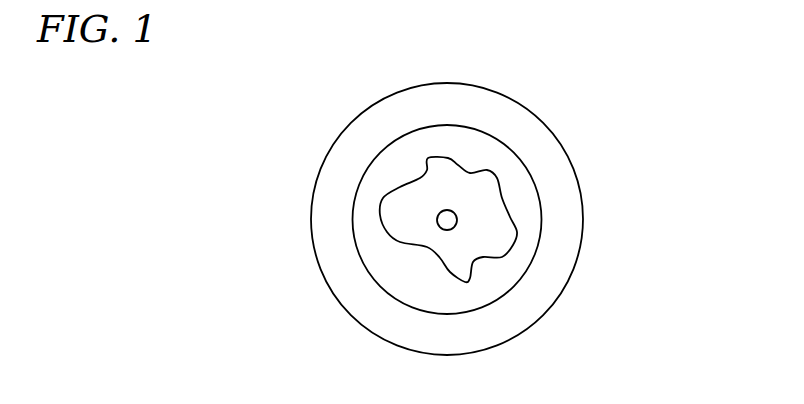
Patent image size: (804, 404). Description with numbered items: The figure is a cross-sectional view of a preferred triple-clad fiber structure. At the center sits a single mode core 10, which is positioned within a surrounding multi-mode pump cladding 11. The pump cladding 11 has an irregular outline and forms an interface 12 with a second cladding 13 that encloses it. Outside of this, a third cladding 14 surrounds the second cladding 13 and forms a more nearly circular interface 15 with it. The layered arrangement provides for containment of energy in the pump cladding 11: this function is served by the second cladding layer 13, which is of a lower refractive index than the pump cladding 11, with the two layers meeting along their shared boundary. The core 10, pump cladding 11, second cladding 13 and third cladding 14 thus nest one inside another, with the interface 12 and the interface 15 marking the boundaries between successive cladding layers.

The single mode core 10 is at (438, 214).
The pump cladding 11 is at (440, 250).
The interface 12 is at (378, 217).
The second cladding 13 is at (508, 268).
The third cladding 14 is at (540, 120).
The interface 15 is at (538, 190).